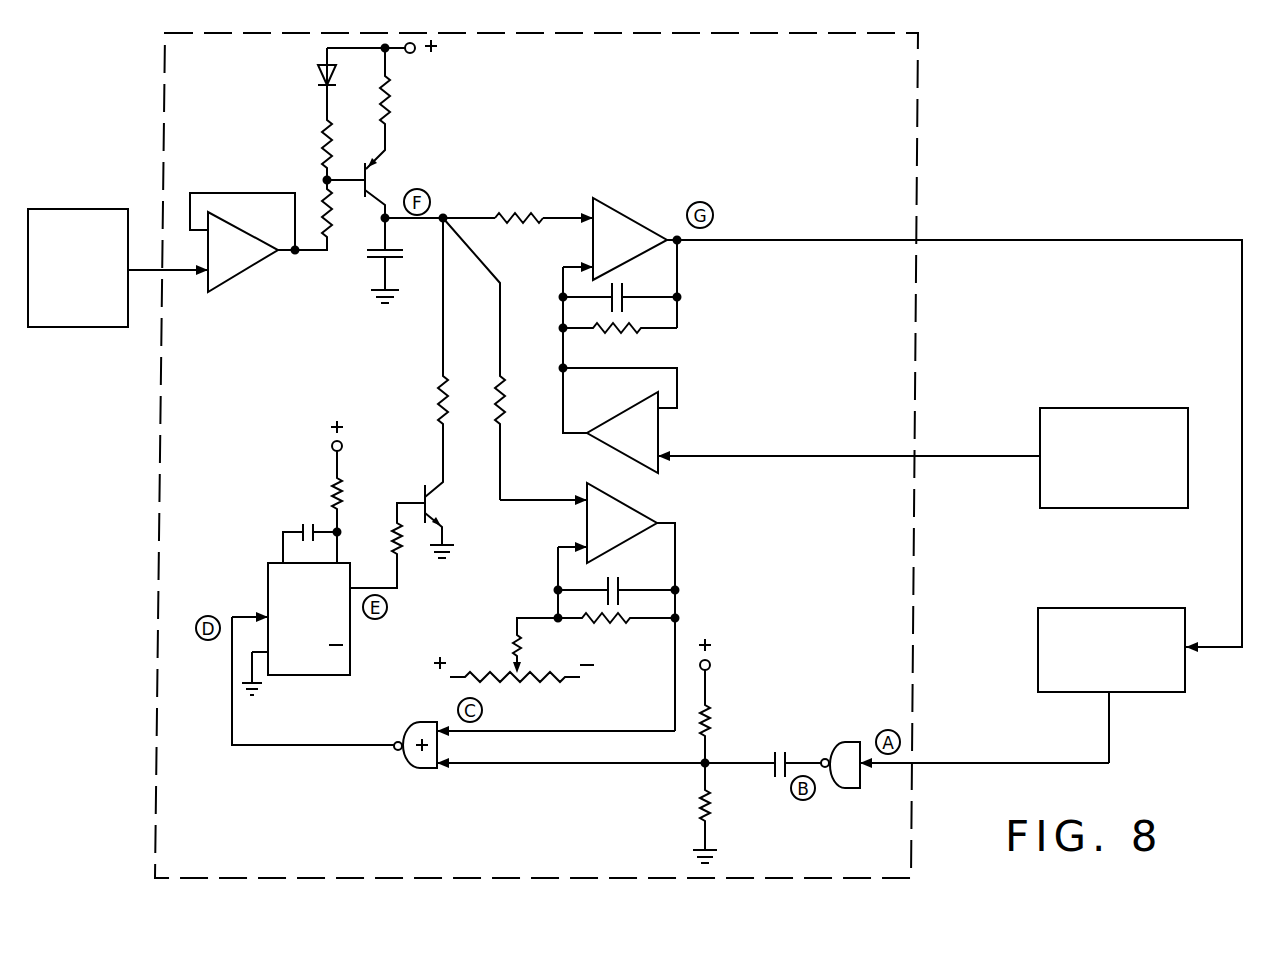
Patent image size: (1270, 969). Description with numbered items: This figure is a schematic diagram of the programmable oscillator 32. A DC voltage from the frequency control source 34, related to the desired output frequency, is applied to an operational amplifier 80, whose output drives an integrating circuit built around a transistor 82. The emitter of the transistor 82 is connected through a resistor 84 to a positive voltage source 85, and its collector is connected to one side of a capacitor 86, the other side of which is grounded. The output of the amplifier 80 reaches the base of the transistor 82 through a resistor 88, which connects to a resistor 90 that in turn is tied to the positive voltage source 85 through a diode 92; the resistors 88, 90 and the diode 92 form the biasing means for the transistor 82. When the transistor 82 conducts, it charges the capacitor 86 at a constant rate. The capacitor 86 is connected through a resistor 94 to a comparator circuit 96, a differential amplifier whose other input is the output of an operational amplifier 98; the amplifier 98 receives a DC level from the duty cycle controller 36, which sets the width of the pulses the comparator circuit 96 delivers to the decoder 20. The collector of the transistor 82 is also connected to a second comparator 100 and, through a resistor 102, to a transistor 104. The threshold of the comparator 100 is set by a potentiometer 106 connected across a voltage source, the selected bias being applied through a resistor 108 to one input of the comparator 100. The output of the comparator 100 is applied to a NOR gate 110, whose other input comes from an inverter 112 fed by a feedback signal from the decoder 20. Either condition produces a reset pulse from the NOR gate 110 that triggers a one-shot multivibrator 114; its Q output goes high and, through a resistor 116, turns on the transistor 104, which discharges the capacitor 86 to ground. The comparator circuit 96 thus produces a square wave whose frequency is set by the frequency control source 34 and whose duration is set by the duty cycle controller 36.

The decoder 20 is at (1148, 692).
The programmable oscillator 32 is at (913, 106).
The frequency control source 34 is at (90, 327).
The duty cycle controller 36 is at (1105, 408).
The operational amplifier 80 is at (240, 270).
The transistor 82 is at (384, 184).
The resistor 84 is at (399, 117).
The positive voltage source 85 is at (418, 52).
The capacitor 86 is at (401, 255).
The resistor 88 is at (338, 218).
The resistor 90 is at (320, 140).
The diode 92 is at (320, 74).
The resistor 94 is at (528, 214).
The comparator circuit 96 is at (637, 221).
The operational amplifier 98 is at (611, 448).
The comparator 100 is at (650, 520).
The resistor 102 is at (440, 393).
The transistor 104 is at (447, 506).
The potentiometer 106 is at (538, 681).
The resistor 108 is at (515, 636).
The NOR gate 110 is at (413, 765).
The inverter 112 is at (838, 742).
The one-shot multivibrator 114 is at (268, 582).
The resistor 116 is at (394, 528).